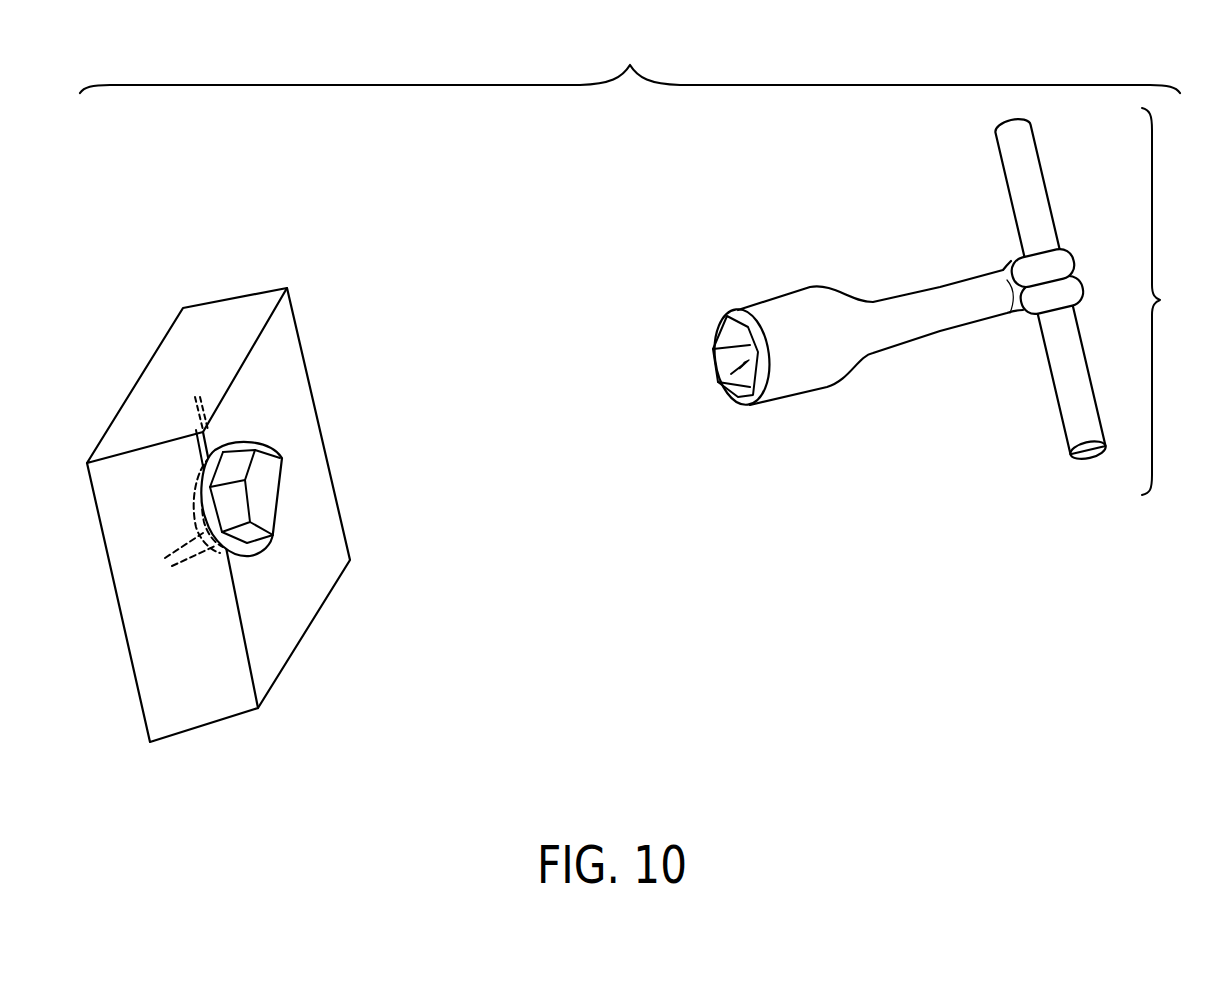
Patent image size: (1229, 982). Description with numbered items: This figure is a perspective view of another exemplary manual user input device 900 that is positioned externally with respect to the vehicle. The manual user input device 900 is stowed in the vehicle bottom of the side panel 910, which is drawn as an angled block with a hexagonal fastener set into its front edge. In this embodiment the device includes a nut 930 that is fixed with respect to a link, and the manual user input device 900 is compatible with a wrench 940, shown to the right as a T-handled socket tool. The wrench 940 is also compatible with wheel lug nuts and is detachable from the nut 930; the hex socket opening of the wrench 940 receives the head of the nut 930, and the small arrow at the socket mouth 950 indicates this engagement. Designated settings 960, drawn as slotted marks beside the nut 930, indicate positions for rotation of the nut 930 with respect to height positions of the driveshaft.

The manual user input device 900 is at (630, 67).
The side panel 910 is at (218, 312).
The nut 930 is at (268, 496).
The wrench 940 is at (959, 301).
The hex socket opening 950 is at (722, 385).
The designated settings 960 is at (200, 397).